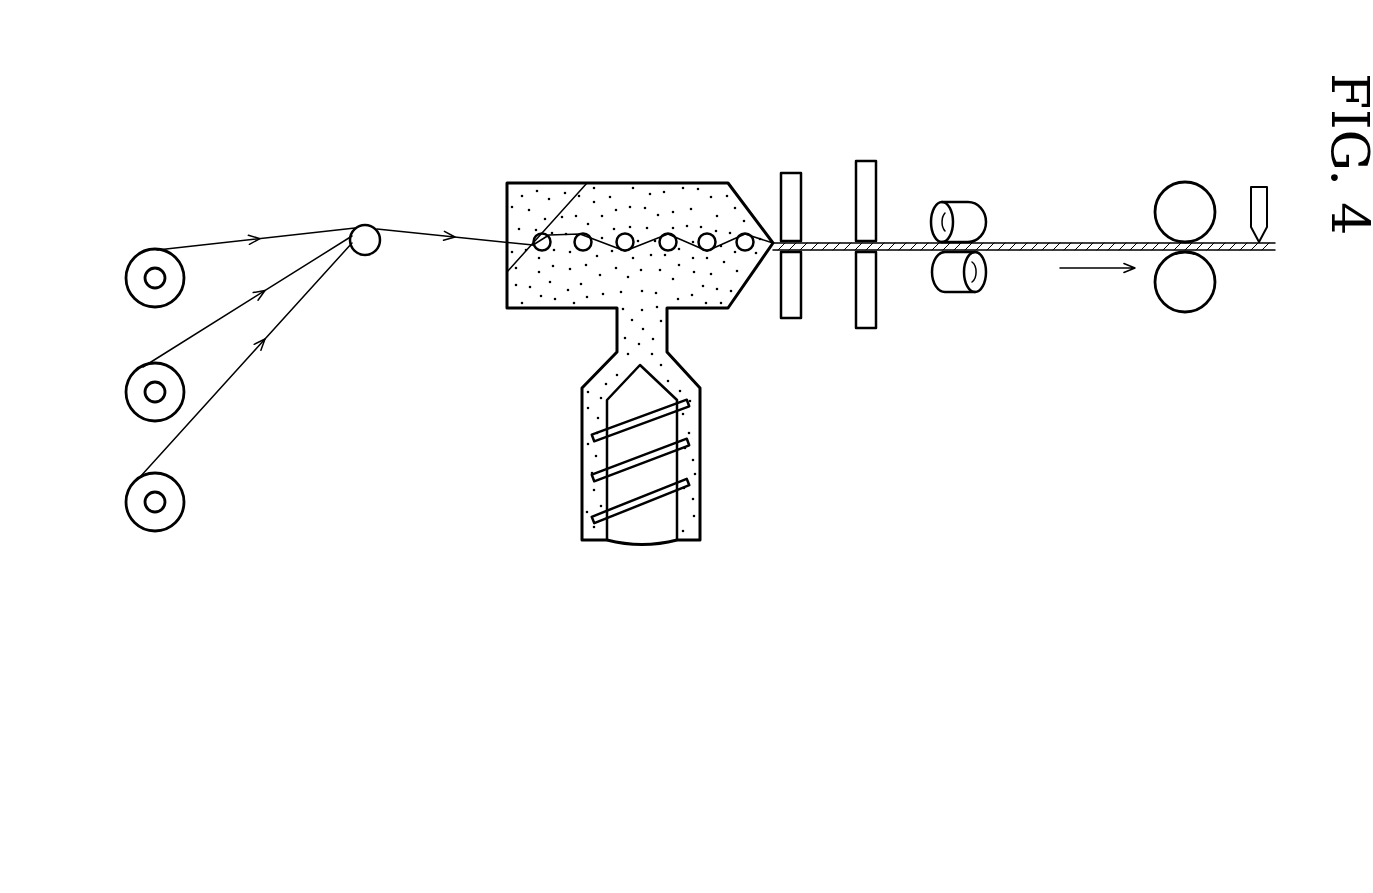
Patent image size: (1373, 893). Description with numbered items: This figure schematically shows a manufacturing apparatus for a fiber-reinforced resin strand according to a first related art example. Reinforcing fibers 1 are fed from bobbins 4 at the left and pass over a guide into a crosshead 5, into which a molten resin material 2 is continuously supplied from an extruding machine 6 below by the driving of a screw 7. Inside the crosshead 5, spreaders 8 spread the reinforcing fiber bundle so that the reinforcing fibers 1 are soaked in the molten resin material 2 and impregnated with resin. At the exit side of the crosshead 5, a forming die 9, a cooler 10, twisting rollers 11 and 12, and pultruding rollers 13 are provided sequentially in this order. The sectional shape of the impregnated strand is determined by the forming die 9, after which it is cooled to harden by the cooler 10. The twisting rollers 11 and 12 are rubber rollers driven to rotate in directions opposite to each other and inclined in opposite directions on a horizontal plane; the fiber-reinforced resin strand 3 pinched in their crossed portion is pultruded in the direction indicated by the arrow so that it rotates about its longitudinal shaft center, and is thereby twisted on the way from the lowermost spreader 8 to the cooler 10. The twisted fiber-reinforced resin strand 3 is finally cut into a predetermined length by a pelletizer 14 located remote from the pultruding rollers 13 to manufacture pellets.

The reinforcing fiber 1 is at (217, 238).
The molten resin material 2 is at (668, 203).
The fiber-reinforced resin strand 3 is at (1013, 252).
The bobbin 4 is at (135, 255).
The crosshead 5 is at (613, 182).
The extruding machine 6 is at (702, 415).
The screw 7 is at (658, 517).
The spreader 8 is at (540, 237).
The forming die 9 is at (792, 180).
The cooler 10 is at (870, 167).
The twisting roller 11 is at (973, 213).
The twisting roller 12 is at (950, 287).
The pultruding rollers 13 is at (1185, 190).
The pelletizer 14 is at (1259, 195).